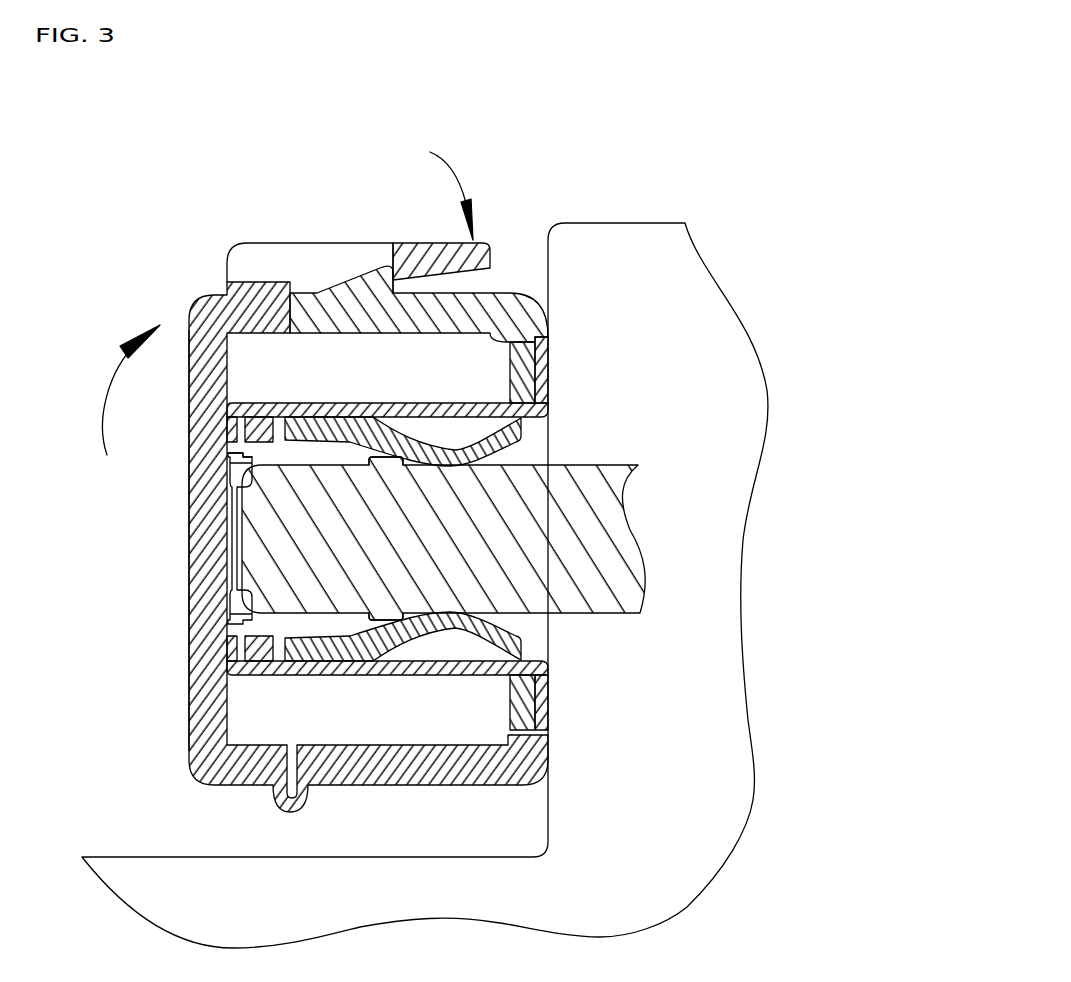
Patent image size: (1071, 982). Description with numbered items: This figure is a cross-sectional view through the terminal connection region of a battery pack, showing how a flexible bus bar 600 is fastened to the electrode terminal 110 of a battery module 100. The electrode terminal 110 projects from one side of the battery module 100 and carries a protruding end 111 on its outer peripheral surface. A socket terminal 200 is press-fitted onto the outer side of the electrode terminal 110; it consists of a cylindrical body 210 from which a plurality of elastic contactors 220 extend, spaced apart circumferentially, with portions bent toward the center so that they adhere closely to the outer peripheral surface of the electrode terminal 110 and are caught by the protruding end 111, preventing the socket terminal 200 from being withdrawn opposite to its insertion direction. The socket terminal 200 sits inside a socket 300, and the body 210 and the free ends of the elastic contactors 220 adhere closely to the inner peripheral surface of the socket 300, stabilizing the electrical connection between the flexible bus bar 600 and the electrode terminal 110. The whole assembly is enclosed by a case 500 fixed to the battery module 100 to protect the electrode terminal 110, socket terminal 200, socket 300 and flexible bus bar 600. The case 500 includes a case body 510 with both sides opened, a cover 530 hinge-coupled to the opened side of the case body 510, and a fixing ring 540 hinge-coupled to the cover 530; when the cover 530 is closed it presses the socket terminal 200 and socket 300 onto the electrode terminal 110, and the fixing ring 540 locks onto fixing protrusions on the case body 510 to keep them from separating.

The battery module 100 is at (645, 190).
The electrode terminal 110 is at (605, 553).
The protruding end 111 is at (398, 613).
The socket terminal 200 is at (315, 392).
The body 210 is at (230, 453).
The elastic contactor 220 is at (445, 460).
The socket 300 is at (371, 372).
The case 500 is at (182, 276).
The case body 510 is at (510, 310).
The cover 530 is at (207, 597).
The fixing ring 540 is at (420, 243).
The flexible bus bar 600 is at (523, 380).